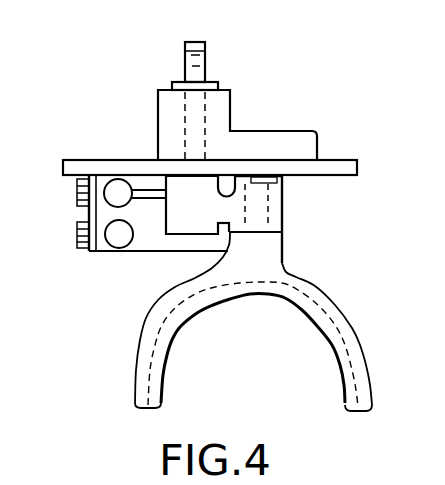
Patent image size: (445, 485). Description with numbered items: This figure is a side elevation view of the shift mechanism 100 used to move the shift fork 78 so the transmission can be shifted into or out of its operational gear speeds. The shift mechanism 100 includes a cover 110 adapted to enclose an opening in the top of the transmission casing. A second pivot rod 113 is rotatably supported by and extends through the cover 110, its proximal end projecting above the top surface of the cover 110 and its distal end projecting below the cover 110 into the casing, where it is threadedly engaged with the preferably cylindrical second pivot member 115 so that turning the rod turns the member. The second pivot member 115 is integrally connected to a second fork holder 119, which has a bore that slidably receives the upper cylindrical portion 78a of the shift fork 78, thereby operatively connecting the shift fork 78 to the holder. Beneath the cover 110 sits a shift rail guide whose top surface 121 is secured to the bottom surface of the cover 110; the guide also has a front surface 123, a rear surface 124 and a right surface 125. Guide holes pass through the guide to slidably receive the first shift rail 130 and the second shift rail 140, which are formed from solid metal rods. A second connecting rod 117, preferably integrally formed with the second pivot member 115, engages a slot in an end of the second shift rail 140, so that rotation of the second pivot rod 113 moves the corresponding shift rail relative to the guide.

The shift mechanism 100 is at (261, 103).
The cover 110 is at (158, 102).
The second pivot rod 113 is at (207, 50).
The second pivot member 115 is at (187, 221).
The second connecting rod 117 is at (142, 189).
The second fork holder 119 is at (281, 200).
The top surface 121 is at (158, 123).
The front surface 123 is at (228, 223).
The rear surface 124 is at (88, 252).
The right surface 125 is at (145, 235).
The first shift rail 130 is at (117, 235).
The second shift rail 140 is at (112, 194).
The shift fork 78 is at (342, 306).
The upper cylindrical portion 78a is at (262, 212).